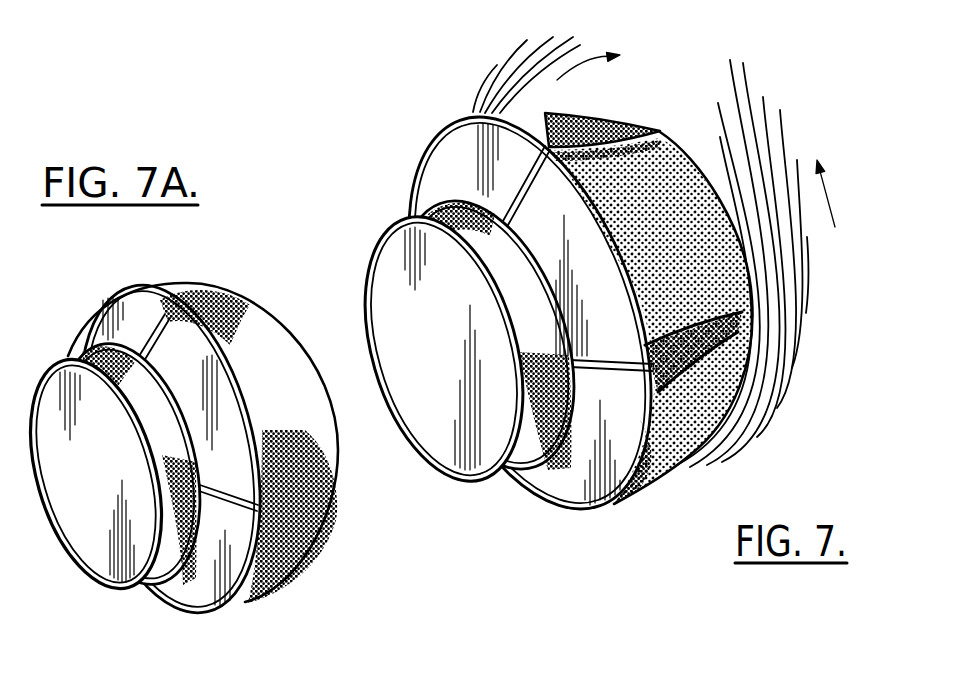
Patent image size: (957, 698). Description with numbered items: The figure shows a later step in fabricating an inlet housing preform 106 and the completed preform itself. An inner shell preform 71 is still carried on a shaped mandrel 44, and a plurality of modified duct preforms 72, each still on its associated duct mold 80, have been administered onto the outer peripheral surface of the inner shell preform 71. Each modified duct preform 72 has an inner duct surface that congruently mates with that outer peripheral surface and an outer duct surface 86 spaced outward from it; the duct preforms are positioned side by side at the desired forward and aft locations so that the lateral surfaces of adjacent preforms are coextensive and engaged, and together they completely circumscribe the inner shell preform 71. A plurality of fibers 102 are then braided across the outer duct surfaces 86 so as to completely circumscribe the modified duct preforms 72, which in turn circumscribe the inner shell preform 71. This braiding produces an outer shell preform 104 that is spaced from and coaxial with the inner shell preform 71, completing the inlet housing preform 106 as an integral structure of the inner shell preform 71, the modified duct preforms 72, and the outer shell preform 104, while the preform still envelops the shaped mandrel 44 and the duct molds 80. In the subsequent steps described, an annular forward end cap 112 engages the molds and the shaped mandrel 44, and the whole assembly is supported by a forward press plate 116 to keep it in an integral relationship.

In FIG. 7A, the shaped mandrel 44 is at (91, 485).
In FIG. 7, the shaped mandrel 44 is at (390, 254).
In FIG. 7A, the inner shell preform 71 is at (96, 590).
In FIG. 7, the inner shell preform 71 is at (500, 489).
In FIG. 7A, the modified duct preform 72 is at (212, 626).
In FIG. 7, the modified duct preform 72 is at (431, 120).
In FIG. 7A, the duct mold 80 is at (94, 325).
In FIG. 7, the duct mold 80 is at (578, 490).
In FIG. 7, the outer duct surface 86 is at (682, 143).
In FIG. 7, the fibers 102 is at (757, 110).
In FIG. 7A, the outer shell preform 104 is at (338, 498).
In FIG. 7A, the inlet housing preform 106 is at (159, 611).
In FIG. 7A, the forward end cap 112 is at (264, 697).
In FIG. 7, the forward press plate 116 is at (601, 697).